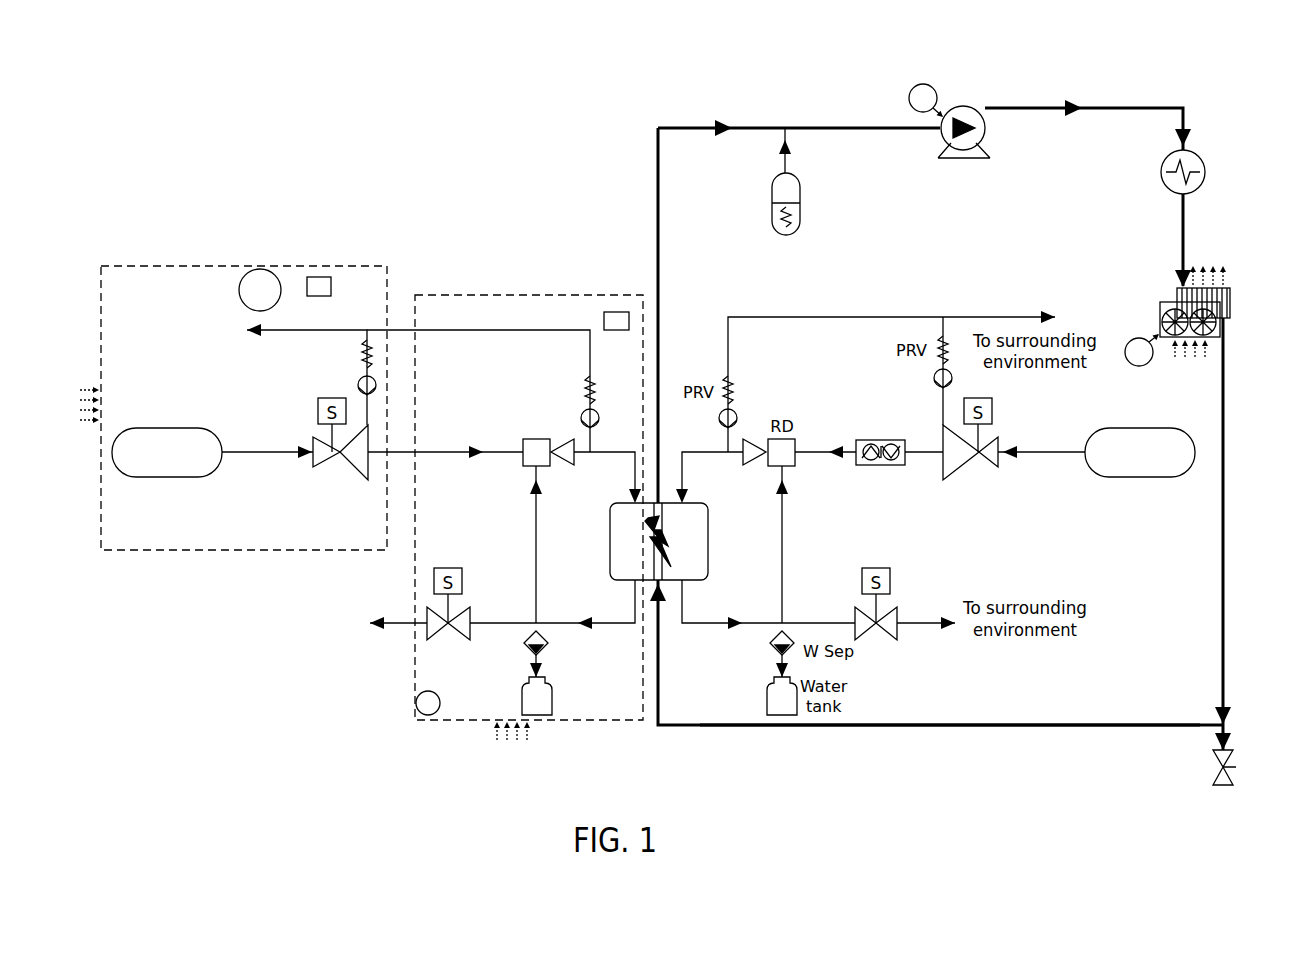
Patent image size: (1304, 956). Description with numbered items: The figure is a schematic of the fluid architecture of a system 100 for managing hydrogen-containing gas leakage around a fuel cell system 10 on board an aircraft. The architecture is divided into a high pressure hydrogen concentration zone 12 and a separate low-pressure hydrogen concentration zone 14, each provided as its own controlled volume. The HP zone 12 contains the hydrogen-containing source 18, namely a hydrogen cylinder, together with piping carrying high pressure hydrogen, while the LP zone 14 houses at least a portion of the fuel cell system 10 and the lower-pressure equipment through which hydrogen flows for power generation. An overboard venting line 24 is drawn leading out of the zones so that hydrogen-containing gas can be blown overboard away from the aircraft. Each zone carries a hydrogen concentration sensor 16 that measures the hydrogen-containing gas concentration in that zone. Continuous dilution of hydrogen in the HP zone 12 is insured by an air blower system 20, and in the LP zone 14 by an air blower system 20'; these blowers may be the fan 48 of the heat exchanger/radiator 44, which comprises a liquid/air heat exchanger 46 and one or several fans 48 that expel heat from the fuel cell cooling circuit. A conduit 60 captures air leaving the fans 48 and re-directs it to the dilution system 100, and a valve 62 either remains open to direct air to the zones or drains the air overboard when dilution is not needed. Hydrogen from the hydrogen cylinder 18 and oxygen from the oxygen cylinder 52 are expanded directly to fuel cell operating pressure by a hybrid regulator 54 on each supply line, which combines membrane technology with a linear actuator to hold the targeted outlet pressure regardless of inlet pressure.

The system 100 is at (555, 108).
The fuel cell system 10 is at (668, 606).
The high pressure hydrogen concentration zone 12 is at (132, 282).
The low pressure hydrogen concentration zone 14 is at (475, 305).
The hydrogen concentration sensor 16 is at (318, 282).
The hydrogen-containing source 18 is at (152, 432).
The air blower system 20 is at (111, 400).
The air blower system 20' is at (471, 756).
The overboard venting line 24 is at (386, 312).
The heat exchanger/radiator 44 is at (1160, 295).
The liquid/air heat exchanger 46 is at (1180, 300).
The fan 48 is at (1170, 305).
The oxygen cylinder 52 is at (1095, 478).
The hybrid regulator 54 is at (300, 497).
The conduit 60 is at (900, 708).
The valve 62 is at (1210, 755).